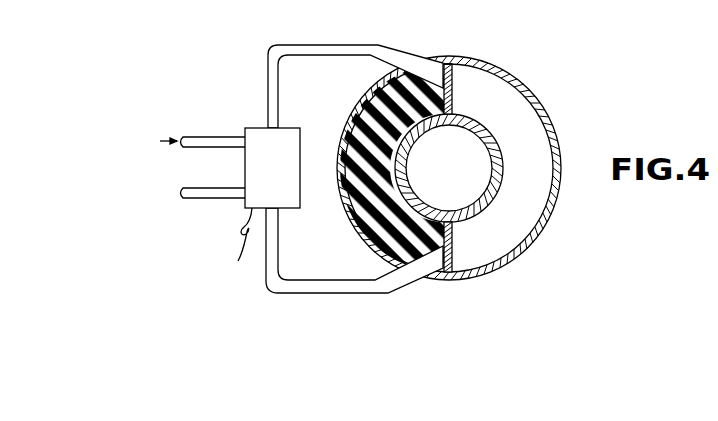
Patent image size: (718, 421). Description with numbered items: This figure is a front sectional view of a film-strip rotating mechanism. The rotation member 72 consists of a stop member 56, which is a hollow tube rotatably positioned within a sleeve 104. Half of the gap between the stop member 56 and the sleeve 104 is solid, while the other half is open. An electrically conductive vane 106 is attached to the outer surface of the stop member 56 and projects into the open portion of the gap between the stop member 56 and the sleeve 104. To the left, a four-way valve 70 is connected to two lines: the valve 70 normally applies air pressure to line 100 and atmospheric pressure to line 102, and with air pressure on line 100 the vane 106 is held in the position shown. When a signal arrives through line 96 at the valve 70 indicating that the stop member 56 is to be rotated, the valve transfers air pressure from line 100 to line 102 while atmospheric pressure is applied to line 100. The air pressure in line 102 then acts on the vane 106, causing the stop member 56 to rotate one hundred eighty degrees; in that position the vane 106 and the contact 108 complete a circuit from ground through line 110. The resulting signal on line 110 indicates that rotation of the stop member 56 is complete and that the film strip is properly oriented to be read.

The stop member 56 is at (475, 201).
The 4-way valve 70 is at (256, 128).
The rotation member 72 is at (556, 95).
The line 96 is at (242, 250).
The line 100 is at (350, 58).
The line 102 is at (340, 283).
The sleeve 104 is at (541, 231).
The vane 106 is at (454, 250).
The contact 108 is at (455, 72).
The line 110 is at (448, 63).